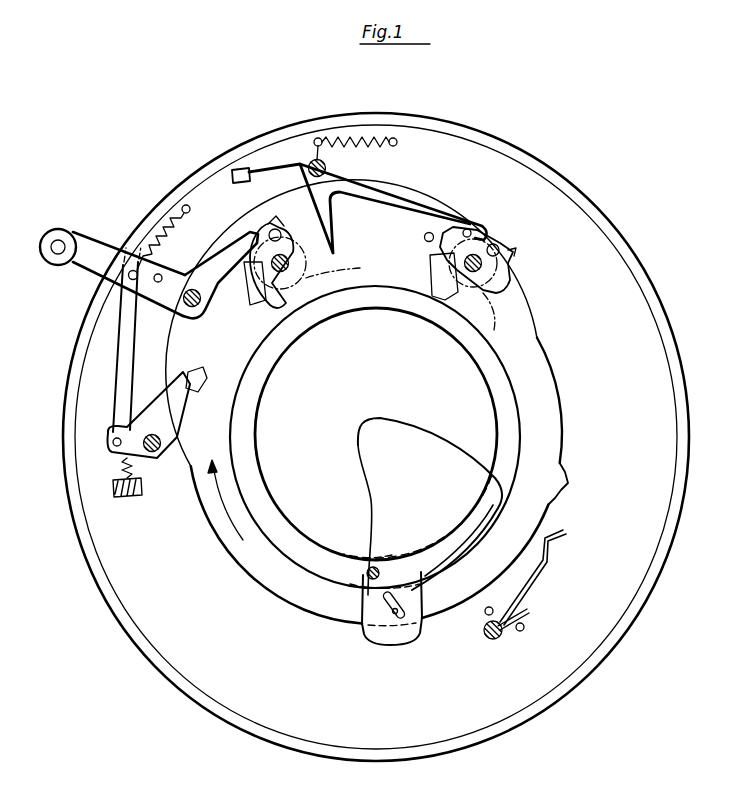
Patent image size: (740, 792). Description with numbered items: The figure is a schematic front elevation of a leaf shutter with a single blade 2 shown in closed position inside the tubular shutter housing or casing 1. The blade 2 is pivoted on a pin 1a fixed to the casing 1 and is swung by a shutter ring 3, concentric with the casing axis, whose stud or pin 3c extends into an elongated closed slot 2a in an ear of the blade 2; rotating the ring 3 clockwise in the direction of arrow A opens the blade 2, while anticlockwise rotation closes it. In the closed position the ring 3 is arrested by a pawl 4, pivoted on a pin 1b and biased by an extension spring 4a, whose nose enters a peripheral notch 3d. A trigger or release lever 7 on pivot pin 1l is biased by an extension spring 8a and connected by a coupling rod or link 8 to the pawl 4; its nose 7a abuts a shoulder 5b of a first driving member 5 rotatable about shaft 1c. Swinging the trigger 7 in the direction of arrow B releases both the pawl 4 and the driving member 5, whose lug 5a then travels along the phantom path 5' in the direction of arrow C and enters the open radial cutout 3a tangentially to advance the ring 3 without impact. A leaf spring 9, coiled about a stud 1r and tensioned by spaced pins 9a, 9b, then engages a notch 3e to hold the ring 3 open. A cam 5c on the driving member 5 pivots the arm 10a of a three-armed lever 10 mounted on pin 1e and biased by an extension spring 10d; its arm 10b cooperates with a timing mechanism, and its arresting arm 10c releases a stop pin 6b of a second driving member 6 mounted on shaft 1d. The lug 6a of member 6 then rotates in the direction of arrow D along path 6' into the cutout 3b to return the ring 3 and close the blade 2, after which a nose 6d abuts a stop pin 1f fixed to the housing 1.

The shutter housing or casing 1 is at (160, 655).
The pin 1a is at (368, 575).
The pin 1b is at (155, 453).
The shaft 1c is at (283, 272).
The shaft 1d is at (470, 272).
The pin 1e is at (313, 160).
The stop pin 1f is at (424, 238).
The pivot pin 1l is at (185, 303).
The stud 1r is at (490, 640).
The shutter blade 2 is at (373, 457).
The elongated closed slot 2a is at (388, 604).
The shutter ring 3 is at (257, 567).
The cam slot or cutout 3a is at (275, 312).
The cam slot or cutout 3b is at (433, 288).
The stud or pin 3c is at (392, 630).
The peripheral recess or notch 3d is at (197, 392).
The recess or notch 3e is at (570, 486).
The pawl 4 is at (172, 417).
The extension spring 4a is at (112, 486).
The driving member 5 is at (264, 265).
The driving lug 5a is at (290, 270).
The shoulder 5b is at (272, 230).
The projection or cam 5c is at (276, 222).
The path of lug 5' is at (346, 268).
The driving member 6 is at (500, 260).
The lug 6a is at (498, 246).
The stop pin 6b is at (468, 229).
The projection or nose 6d is at (514, 252).
The path of lug 6' is at (505, 320).
The trigger or release lever 7 is at (90, 252).
The end portion or nose 7a is at (245, 243).
The coupling rod or link 8 is at (132, 362).
The extension spring 8a is at (153, 232).
The leaf spring 9 is at (546, 553).
The pin 9a is at (485, 617).
The pin 9b is at (525, 627).
The three-armed lever 10 is at (403, 197).
The arm 10a is at (333, 222).
The arm 10b is at (244, 170).
The arresting arm 10c is at (480, 232).
The extension spring 10d is at (378, 140).
The arrow A is at (226, 520).
The arrow B is at (204, 365).
The arrow C is at (247, 262).
The arrow D is at (507, 283).